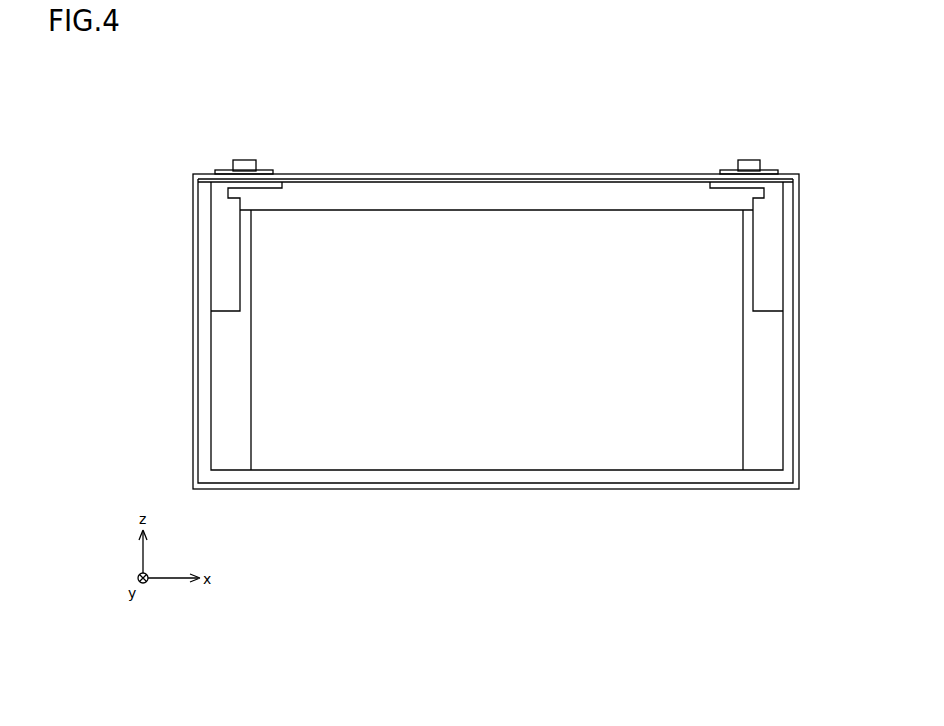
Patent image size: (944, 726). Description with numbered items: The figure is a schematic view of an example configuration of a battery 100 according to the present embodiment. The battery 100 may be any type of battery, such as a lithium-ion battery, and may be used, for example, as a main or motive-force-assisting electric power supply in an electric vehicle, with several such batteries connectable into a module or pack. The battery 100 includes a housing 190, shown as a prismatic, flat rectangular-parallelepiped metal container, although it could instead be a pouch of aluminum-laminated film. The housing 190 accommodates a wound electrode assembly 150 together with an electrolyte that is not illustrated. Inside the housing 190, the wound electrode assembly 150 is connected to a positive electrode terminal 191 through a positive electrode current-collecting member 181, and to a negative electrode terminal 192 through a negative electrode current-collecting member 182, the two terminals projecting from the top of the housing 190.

The battery 100 is at (834, 115).
The wound electrode assembly 150 is at (497, 429).
The positive electrode current-collecting member 181 is at (768, 264).
The negative electrode current-collecting member 182 is at (218, 256).
The housing 190 is at (495, 175).
The positive electrode terminal 191 is at (750, 160).
The negative electrode terminal 192 is at (243, 160).